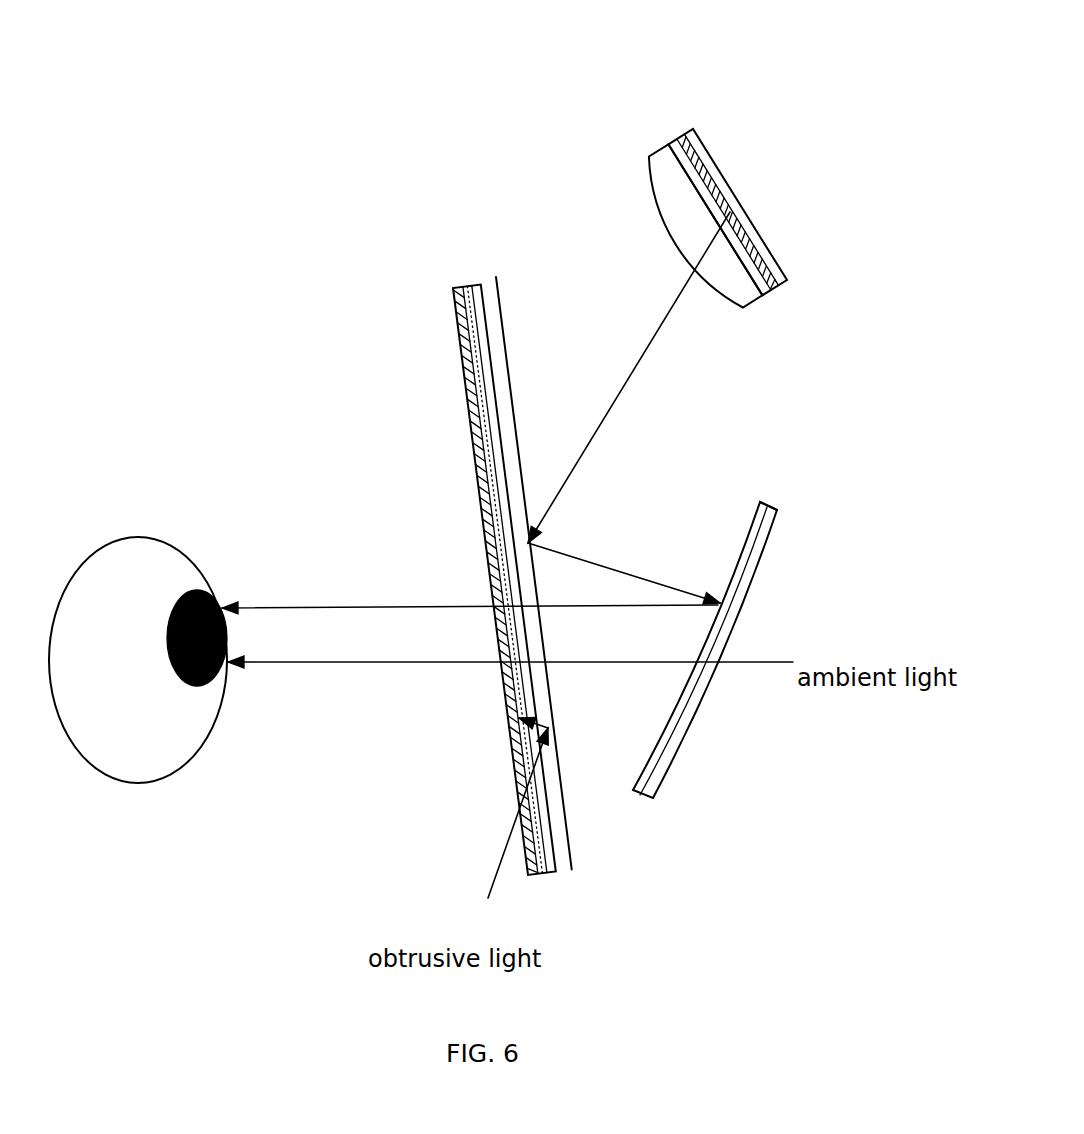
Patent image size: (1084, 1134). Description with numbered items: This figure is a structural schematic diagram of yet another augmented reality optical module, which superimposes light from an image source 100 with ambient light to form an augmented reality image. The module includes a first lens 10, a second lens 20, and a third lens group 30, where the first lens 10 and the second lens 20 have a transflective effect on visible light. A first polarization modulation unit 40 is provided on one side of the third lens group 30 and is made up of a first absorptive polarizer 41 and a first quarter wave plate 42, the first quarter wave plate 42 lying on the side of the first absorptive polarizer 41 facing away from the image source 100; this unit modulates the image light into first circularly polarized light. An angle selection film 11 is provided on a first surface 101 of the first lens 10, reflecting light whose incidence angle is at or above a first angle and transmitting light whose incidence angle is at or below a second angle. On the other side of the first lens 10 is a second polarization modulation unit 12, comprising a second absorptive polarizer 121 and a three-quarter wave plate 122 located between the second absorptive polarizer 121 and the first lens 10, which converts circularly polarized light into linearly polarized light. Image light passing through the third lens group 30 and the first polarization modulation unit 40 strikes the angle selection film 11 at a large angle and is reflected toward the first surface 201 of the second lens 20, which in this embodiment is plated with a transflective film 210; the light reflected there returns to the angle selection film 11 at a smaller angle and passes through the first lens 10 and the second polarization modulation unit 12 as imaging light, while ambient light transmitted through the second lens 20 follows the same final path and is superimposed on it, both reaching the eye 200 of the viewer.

The first lens 10 is at (425, 536).
The angle selection film 11 is at (500, 278).
The second polarization modulation unit 12 is at (357, 292).
The second absorptive polarizer 121 is at (457, 320).
The three-quarter wave plate 122 is at (458, 357).
The first surface 101 is at (502, 364).
The second lens 20 is at (750, 606).
The first surface 201 is at (728, 578).
The transflective film 210 is at (760, 500).
The third lens group 30 is at (650, 157).
The first polarization modulation unit 40 is at (712, 155).
The first absorptive polarizer 41 is at (690, 133).
The first quarter wave plate 42 is at (668, 147).
The image source 100 is at (742, 192).
The human eye 200 is at (135, 537).